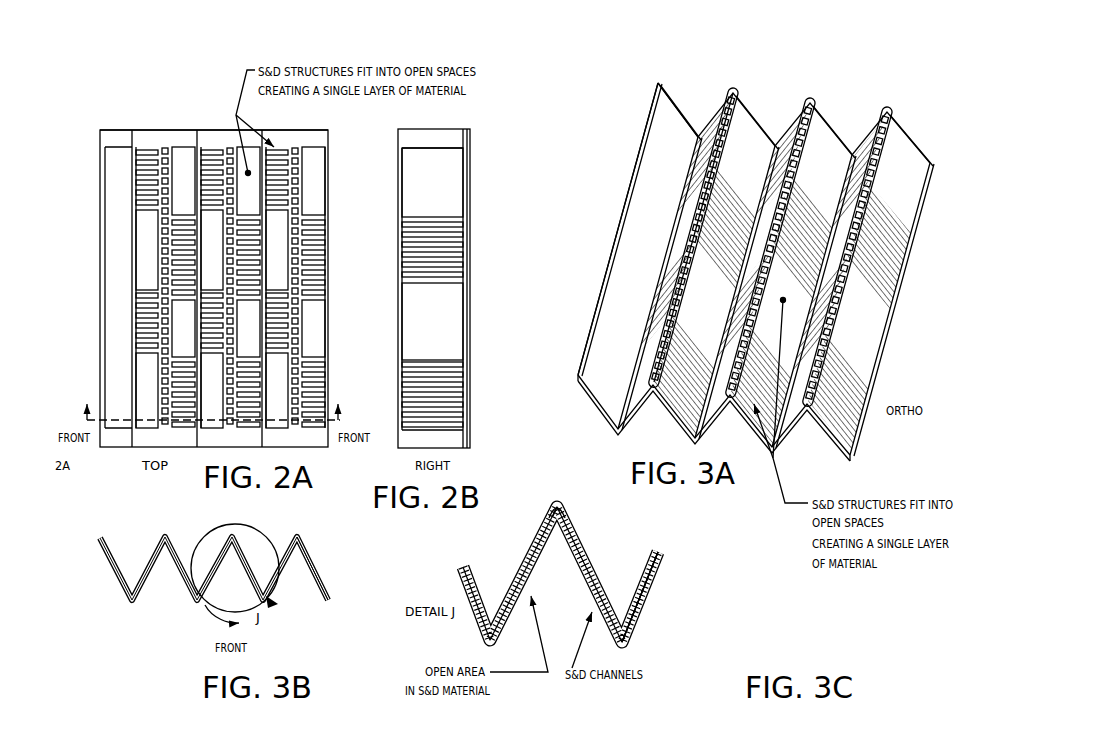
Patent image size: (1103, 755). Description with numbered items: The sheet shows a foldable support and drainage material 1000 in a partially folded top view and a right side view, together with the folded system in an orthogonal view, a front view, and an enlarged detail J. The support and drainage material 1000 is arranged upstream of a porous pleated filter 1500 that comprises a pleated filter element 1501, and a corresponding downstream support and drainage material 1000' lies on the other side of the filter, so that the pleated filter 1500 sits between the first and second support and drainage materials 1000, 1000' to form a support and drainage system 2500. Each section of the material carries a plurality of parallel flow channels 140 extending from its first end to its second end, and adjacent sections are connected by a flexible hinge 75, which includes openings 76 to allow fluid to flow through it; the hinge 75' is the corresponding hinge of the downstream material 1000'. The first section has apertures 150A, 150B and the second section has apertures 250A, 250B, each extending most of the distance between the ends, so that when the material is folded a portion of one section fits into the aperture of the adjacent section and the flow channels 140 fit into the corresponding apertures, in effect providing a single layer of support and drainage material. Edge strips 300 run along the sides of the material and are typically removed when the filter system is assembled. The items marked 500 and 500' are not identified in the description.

In FIG. 2A, the porous pleated filter 1500 is at (120, 304).
In FIG. 2B, the porous pleated filter 1500 is at (445, 162).
In FIG. 3A, the porous pleated filter 1500 is at (639, 229).
In FIG. 3C, the porous pleated filter 1500 is at (665, 555).
In FIG. 2A, the pleated filter element 1501 is at (222, 233).
In FIG. 3A, the pleated filter element 1501 is at (618, 229).
In FIG. 3C, the pleated filter element 1501 is at (706, 595).
In FIG. 2A, the first section aperture 150A is at (308, 186).
In FIG. 3A, the first section aperture 150A is at (902, 188).
In FIG. 3C, the first section aperture 150A is at (645, 583).
In FIG. 2A, the first section aperture 150B is at (308, 318).
In FIG. 3A, the first section aperture 150B is at (862, 313).
In FIG. 2A, the second section aperture 250A is at (212, 206).
In FIG. 3A, the second section aperture 250A is at (842, 232).
In FIG. 2A, the second section aperture 250B is at (212, 346).
In FIG. 3A, the second section aperture 250B is at (801, 390).
In FIG. 3A, the flexible hinge 75 is at (713, 211).
In FIG. 3C, the flexible hinge 75 is at (536, 463).
In FIG. 3A, the opening 76 is at (727, 100).
In FIG. 3A, the folded assembly 500 is at (798, 267).
In FIG. 3A, the edge strip 300 is at (918, 168).
In FIG. 3A, the parallel flow channels 140 is at (895, 256).
In FIG. 3C, the parallel flow channels 140 is at (590, 545).
In FIG. 3A, the folded assembly portion 500' is at (714, 435).
In FIG. 3B, the support and drainage material 1000 is at (250, 568).
In FIG. 3C, the support and drainage material 1000 is at (560, 550).
In FIG. 3B, the downstream support and drainage material 1000' is at (318, 598).
In FIG. 3C, the downstream support and drainage material 1000' is at (679, 608).
In FIG. 3B, the support and drainage system 2500 is at (378, 588).
In FIG. 3C, the flexible hinge of downstream material 75' is at (558, 547).